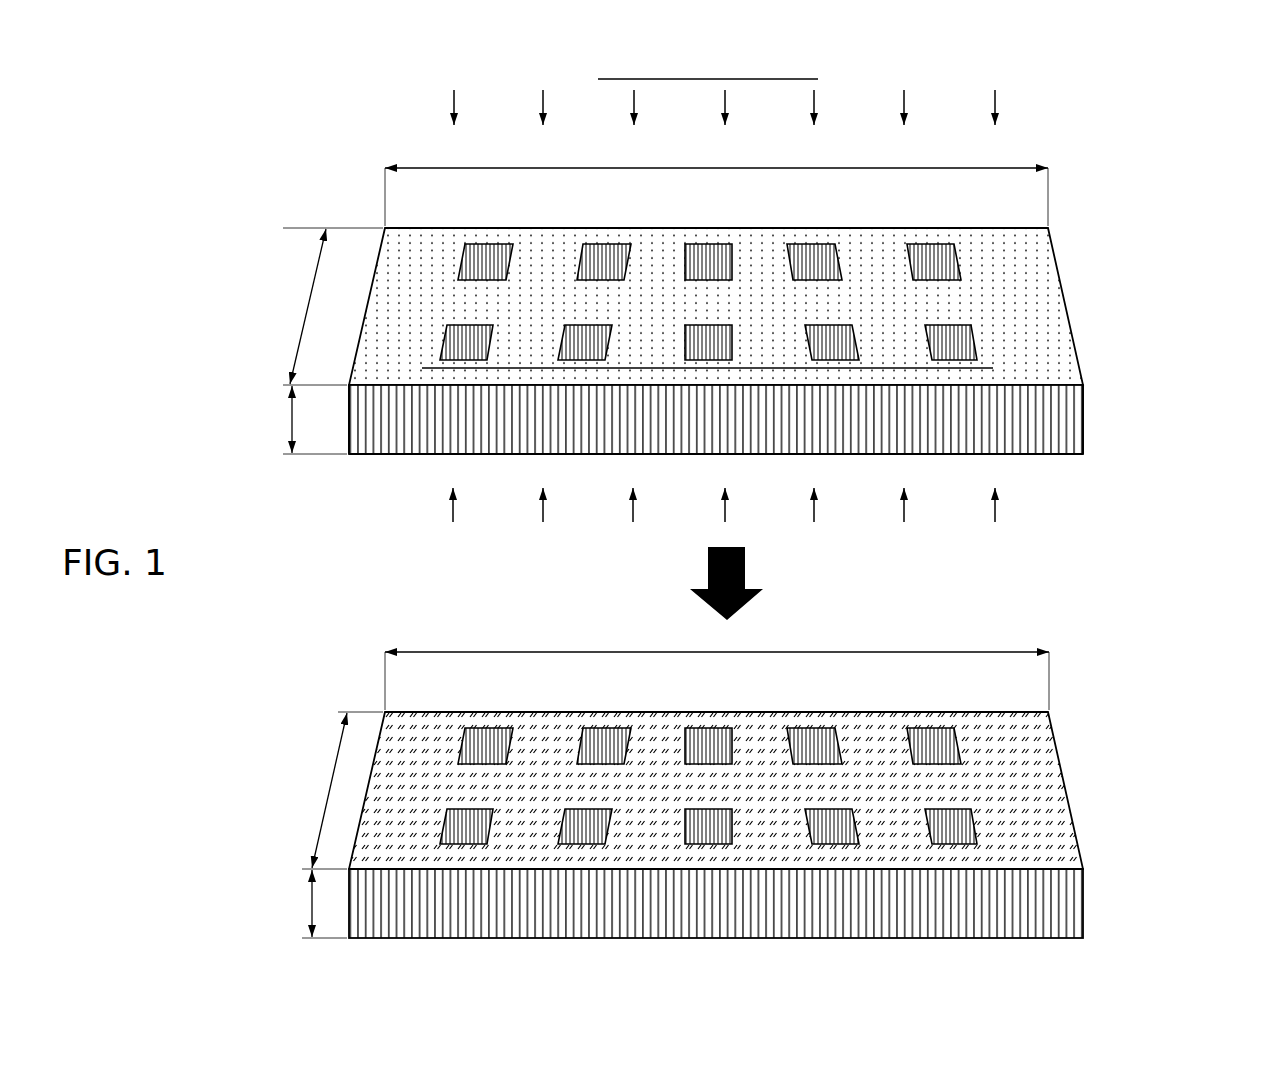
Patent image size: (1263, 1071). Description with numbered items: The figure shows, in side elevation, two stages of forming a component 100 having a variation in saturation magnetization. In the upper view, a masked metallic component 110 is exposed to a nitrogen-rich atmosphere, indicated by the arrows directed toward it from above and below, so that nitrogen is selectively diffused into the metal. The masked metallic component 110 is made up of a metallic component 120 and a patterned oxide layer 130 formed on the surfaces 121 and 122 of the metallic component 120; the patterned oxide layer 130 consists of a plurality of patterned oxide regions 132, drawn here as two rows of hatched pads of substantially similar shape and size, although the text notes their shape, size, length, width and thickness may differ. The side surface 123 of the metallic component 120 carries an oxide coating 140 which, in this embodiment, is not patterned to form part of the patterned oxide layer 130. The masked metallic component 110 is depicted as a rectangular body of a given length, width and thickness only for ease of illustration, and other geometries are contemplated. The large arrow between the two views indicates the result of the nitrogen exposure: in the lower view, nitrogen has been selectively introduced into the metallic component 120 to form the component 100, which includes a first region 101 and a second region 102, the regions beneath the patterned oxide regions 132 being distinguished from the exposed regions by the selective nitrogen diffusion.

The component 100 is at (1050, 620).
The first region 101 is at (840, 735).
The second region 102 is at (545, 770).
The masked metallic component 110 is at (1123, 115).
The metallic component 120 is at (367, 455).
The surface 121 is at (545, 287).
The surface 122 is at (1068, 455).
The side surface 123 is at (390, 400).
The patterned oxide layer 130 is at (780, 368).
The patterned oxide regions 132 is at (958, 263).
The oxide coating 140 is at (1075, 427).